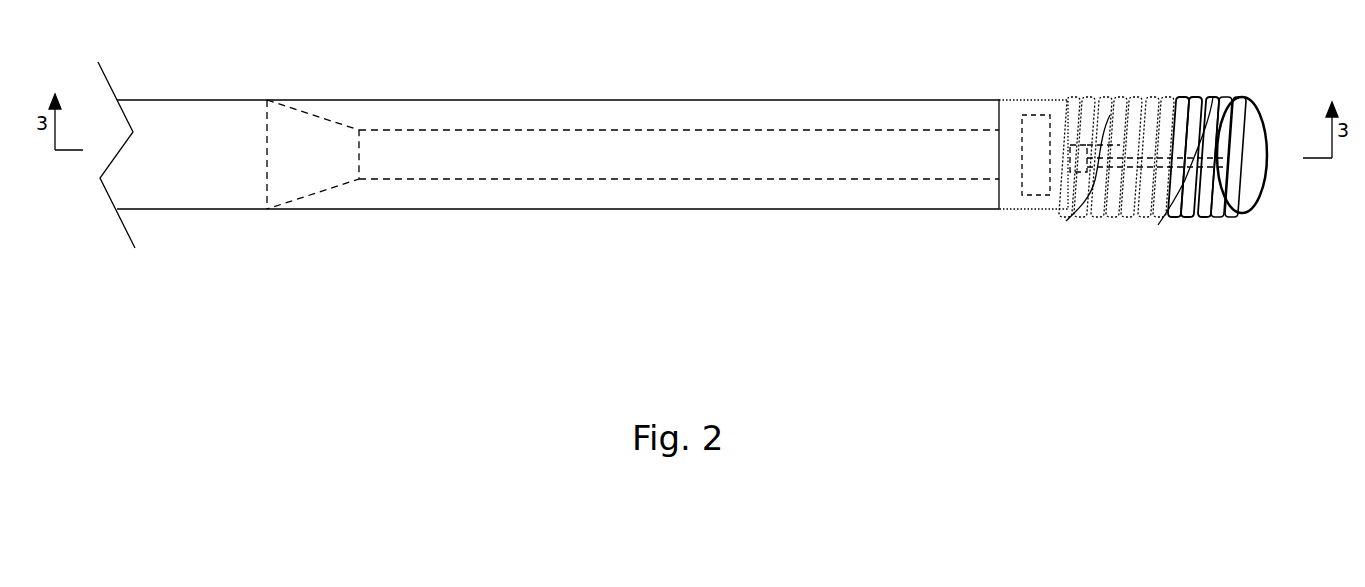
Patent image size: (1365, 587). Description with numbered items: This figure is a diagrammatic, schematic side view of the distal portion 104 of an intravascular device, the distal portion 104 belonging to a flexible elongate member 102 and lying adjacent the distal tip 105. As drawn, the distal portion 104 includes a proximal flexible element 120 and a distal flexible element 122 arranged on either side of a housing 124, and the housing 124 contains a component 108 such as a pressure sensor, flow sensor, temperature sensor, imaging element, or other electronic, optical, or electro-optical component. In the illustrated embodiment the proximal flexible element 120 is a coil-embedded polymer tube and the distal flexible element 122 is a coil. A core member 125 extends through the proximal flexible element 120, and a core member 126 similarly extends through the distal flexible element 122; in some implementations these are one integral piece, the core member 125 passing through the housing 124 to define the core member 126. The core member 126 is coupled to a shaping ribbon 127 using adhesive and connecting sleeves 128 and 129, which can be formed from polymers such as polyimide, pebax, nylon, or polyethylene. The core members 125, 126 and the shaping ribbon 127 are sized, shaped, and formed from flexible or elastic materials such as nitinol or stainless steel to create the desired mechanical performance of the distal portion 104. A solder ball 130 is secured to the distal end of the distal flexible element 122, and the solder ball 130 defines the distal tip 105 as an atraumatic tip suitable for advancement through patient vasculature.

The flexible elongate member 102 is at (193, 207).
The distal portion 104 is at (428, 275).
The distal tip 105 is at (1267, 145).
The component 108 is at (1028, 195).
The proximal flexible element 120 is at (586, 98).
The distal flexible element 122 is at (1213, 97).
The housing 124 is at (1032, 100).
The core member 125 is at (739, 128).
The core member 126 is at (1110, 115).
The shaping ribbon 127 is at (1158, 220).
The connecting sleeve 128 is at (1066, 220).
The connecting sleeve 129 is at (1108, 220).
The solder ball 130 is at (1243, 218).